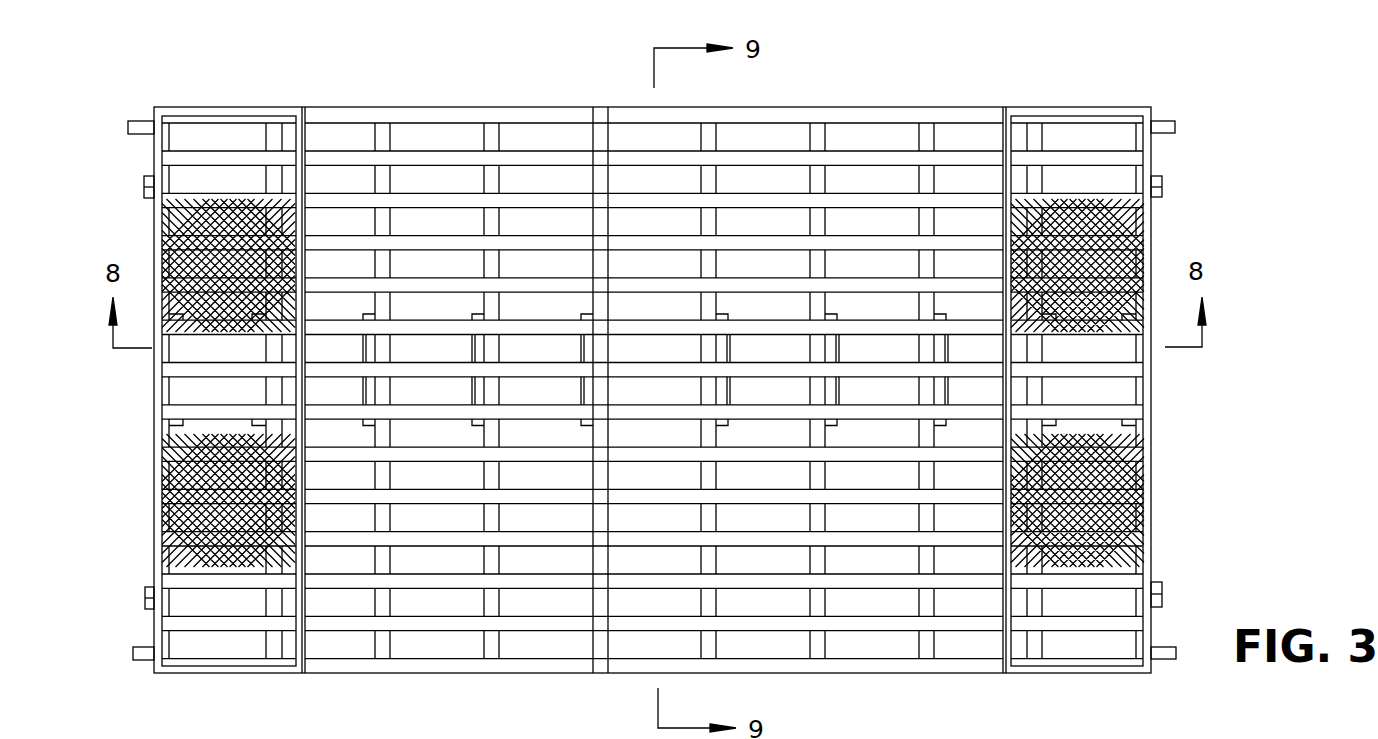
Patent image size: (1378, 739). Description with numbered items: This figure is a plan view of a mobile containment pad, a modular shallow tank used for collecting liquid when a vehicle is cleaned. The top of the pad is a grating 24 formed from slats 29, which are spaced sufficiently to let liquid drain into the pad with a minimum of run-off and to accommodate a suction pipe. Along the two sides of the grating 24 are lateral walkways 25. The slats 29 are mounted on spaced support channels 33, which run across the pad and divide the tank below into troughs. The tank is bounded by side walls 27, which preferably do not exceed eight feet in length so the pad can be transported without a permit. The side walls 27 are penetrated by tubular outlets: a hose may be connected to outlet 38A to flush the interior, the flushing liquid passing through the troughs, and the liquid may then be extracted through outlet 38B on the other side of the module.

The grating 24 is at (880, 631).
The lateral walkways 25 is at (1135, 495).
The side walls 27 is at (1150, 435).
The slats 29 is at (443, 622).
The support channels 33 is at (376, 563).
The outlet 38A is at (148, 602).
The outlet 38B is at (1163, 598).